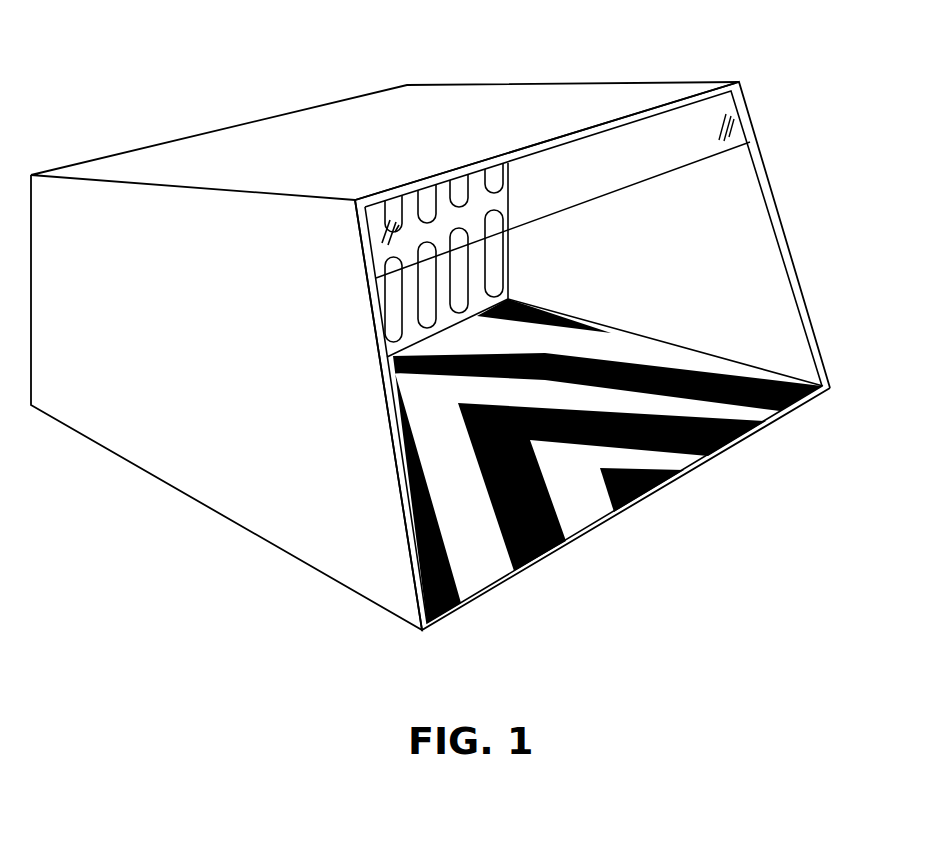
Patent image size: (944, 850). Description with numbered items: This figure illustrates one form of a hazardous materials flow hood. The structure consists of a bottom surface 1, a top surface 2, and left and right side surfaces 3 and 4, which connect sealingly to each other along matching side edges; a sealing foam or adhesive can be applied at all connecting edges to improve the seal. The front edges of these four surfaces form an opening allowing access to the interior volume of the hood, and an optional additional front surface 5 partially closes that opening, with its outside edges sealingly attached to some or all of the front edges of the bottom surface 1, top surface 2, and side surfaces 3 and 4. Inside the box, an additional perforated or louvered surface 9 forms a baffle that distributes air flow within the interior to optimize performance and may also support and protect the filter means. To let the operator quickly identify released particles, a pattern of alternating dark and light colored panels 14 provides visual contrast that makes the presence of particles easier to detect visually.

The bottom surface 1 is at (673, 462).
The top surface 2 is at (327, 111).
The left side surface 3 is at (245, 480).
The right side surface 4 is at (739, 227).
The front surface 5 is at (689, 127).
The perforated or louvered surface 9 is at (478, 274).
The pattern of alternating dark and light colored panels 14 is at (540, 555).